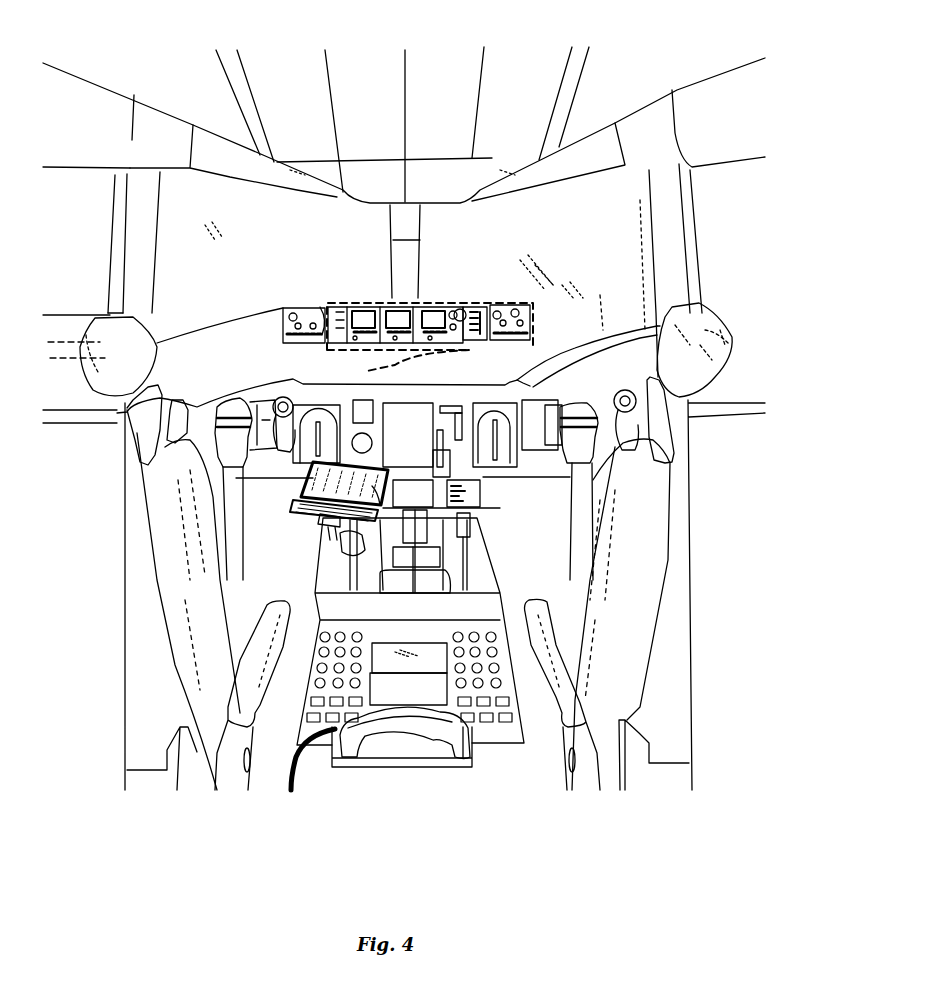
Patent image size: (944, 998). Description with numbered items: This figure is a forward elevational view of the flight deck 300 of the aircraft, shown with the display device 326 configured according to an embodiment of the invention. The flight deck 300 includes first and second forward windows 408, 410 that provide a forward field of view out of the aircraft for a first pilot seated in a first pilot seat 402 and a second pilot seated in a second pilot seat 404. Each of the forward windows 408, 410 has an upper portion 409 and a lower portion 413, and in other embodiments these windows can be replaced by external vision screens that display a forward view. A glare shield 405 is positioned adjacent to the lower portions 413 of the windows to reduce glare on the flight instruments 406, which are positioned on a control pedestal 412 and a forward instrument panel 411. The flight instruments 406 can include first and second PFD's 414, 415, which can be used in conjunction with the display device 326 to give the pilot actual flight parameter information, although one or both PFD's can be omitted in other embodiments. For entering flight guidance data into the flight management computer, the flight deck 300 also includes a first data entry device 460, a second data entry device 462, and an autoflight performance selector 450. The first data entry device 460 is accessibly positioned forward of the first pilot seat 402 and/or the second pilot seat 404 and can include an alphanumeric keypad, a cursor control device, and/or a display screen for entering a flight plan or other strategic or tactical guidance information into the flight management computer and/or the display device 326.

The flight deck 300 is at (724, 755).
The display device 326 is at (443, 303).
The first pilot seat 402 is at (73, 355).
The second pilot seat 404 is at (749, 383).
The glare shield 405 is at (520, 348).
The flight instruments 406 is at (505, 294).
The first forward window 408 is at (283, 240).
The upper portion 409 is at (198, 192).
The second forward window 410 is at (519, 230).
The forward instrument panel 411 is at (657, 326).
The control pedestal 412 is at (506, 733).
The lower portion 413 is at (170, 304).
The first PFD 414 is at (257, 403).
The second PFD 415 is at (705, 352).
The autoflight performance selector 450 is at (465, 327).
The first data entry device 460 is at (302, 510).
The second data entry device 462 is at (325, 304).